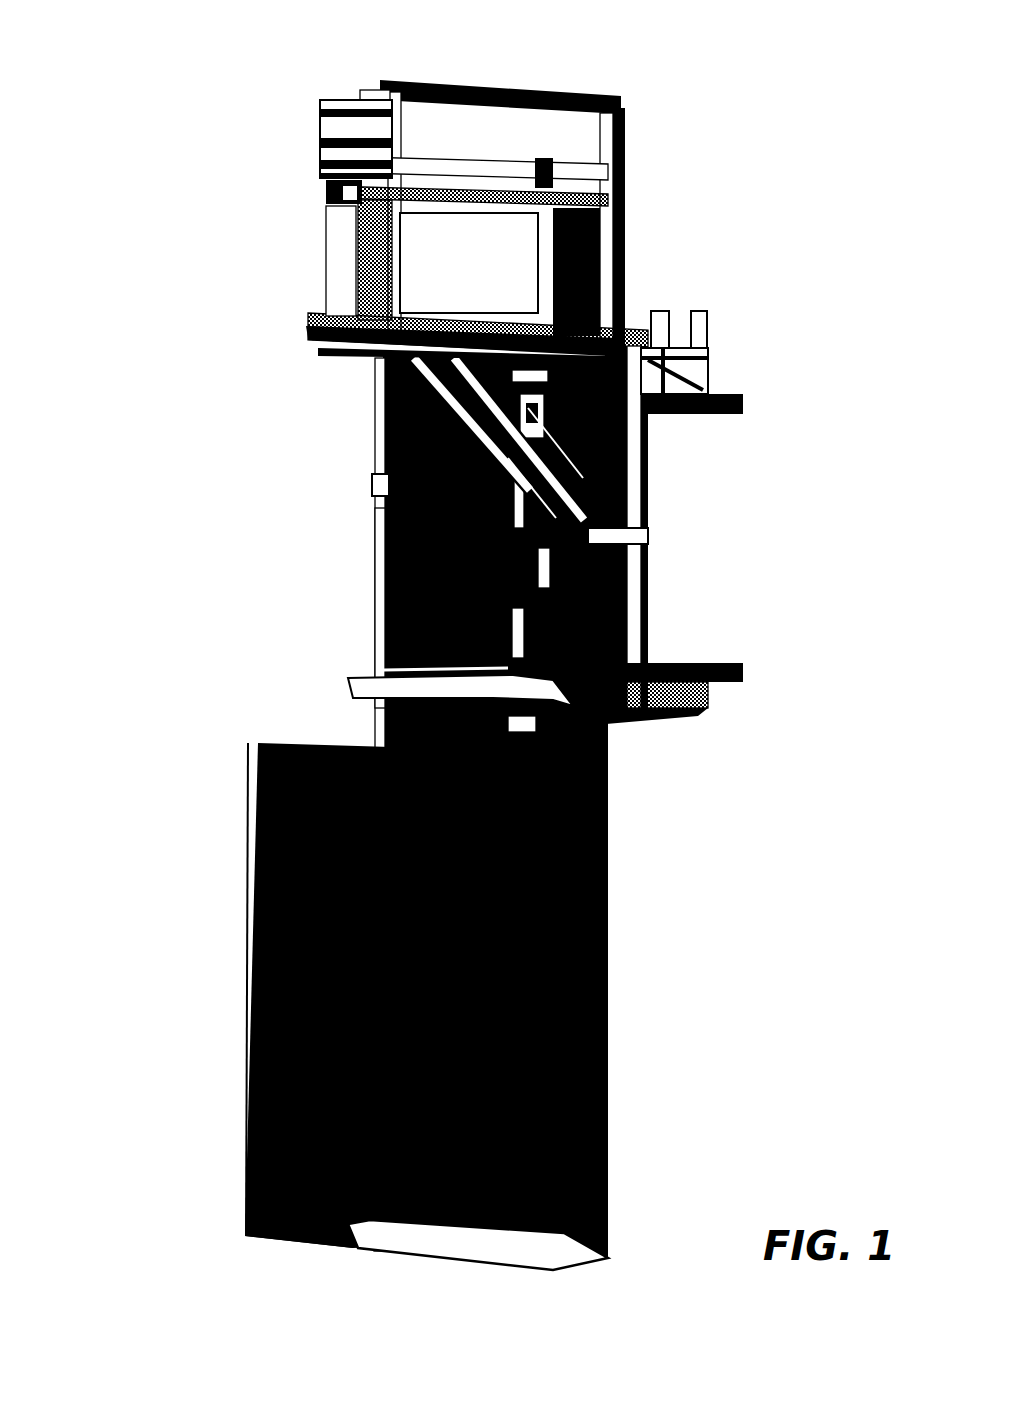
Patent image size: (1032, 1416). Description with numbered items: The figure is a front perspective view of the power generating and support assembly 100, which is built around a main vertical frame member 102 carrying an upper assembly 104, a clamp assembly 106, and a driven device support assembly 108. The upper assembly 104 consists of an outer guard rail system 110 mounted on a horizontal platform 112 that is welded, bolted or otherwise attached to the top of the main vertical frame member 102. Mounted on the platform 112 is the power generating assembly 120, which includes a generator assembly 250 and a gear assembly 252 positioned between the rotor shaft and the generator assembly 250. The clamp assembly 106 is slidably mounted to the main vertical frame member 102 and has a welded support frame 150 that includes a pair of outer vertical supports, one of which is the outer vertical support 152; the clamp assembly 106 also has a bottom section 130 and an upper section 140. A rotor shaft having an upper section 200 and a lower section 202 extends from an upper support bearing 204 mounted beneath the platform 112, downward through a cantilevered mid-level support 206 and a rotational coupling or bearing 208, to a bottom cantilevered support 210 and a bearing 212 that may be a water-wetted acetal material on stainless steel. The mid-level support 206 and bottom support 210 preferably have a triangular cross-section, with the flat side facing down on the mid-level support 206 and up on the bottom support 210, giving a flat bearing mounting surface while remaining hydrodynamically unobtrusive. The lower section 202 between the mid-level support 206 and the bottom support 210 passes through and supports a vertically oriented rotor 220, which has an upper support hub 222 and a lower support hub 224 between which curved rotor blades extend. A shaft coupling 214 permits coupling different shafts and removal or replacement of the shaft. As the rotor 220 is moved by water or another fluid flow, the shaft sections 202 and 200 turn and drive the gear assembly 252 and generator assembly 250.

The power generating and support assembly 100 is at (424, 800).
The main vertical frame member 102 is at (572, 783).
The upper assembly 104 is at (491, 190).
The clamp assembly 106 is at (730, 517).
The driven device support assembly 108 is at (348, 1021).
The outer guard rail system 110 is at (492, 76).
The horizontal platform 112 is at (305, 336).
The power generating assembly 120 is at (302, 150).
The bottom section 130 is at (745, 664).
The upper section 140 is at (742, 394).
The support frame 150 is at (644, 490).
The outer vertical support 152 is at (636, 536).
The upper section of rotor shaft 200 is at (366, 391).
The lower section of rotor shaft 202 is at (366, 560).
The upper support bearing 204 is at (340, 350).
The cantilevered mid-level support 206 is at (345, 676).
The rotational coupling or bearing 208 is at (362, 664).
The bottom cantilevered support 210 is at (427, 1262).
The bearing 212 is at (368, 1250).
The shaft coupling 214 is at (363, 478).
The rotor 220 is at (238, 1133).
The upper support hub 222 is at (298, 736).
The lower support hub 224 is at (278, 1238).
The generator assembly 250 is at (360, 100).
The gear assembly 252 is at (370, 264).